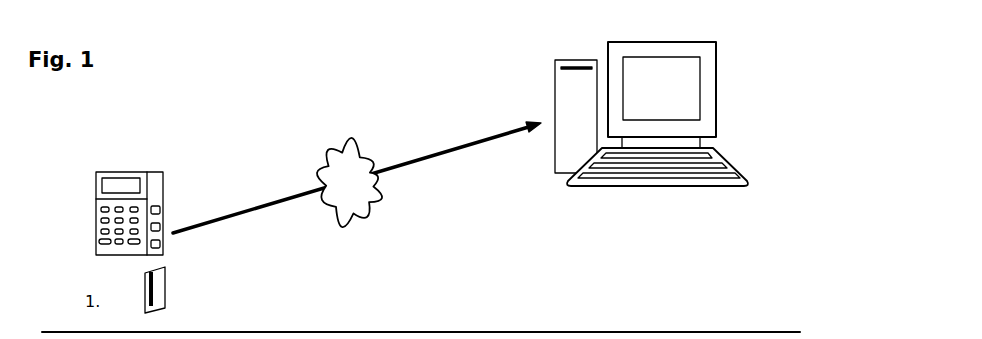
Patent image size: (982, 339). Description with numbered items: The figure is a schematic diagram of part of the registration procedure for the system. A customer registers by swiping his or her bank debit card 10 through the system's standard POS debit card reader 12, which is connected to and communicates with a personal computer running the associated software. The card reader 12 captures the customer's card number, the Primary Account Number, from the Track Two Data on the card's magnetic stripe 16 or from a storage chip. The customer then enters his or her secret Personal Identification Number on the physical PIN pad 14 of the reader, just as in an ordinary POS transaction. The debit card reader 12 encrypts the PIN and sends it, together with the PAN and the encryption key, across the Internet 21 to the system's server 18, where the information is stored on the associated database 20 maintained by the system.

The bank debit card 10 is at (165, 293).
The POS debit card reader 12 is at (151, 157).
The PIN pad 14 is at (106, 217).
The magnetic stripe 16 is at (155, 311).
The server 18 is at (612, 122).
The database 20 is at (578, 153).
The Internet 21 is at (349, 182).